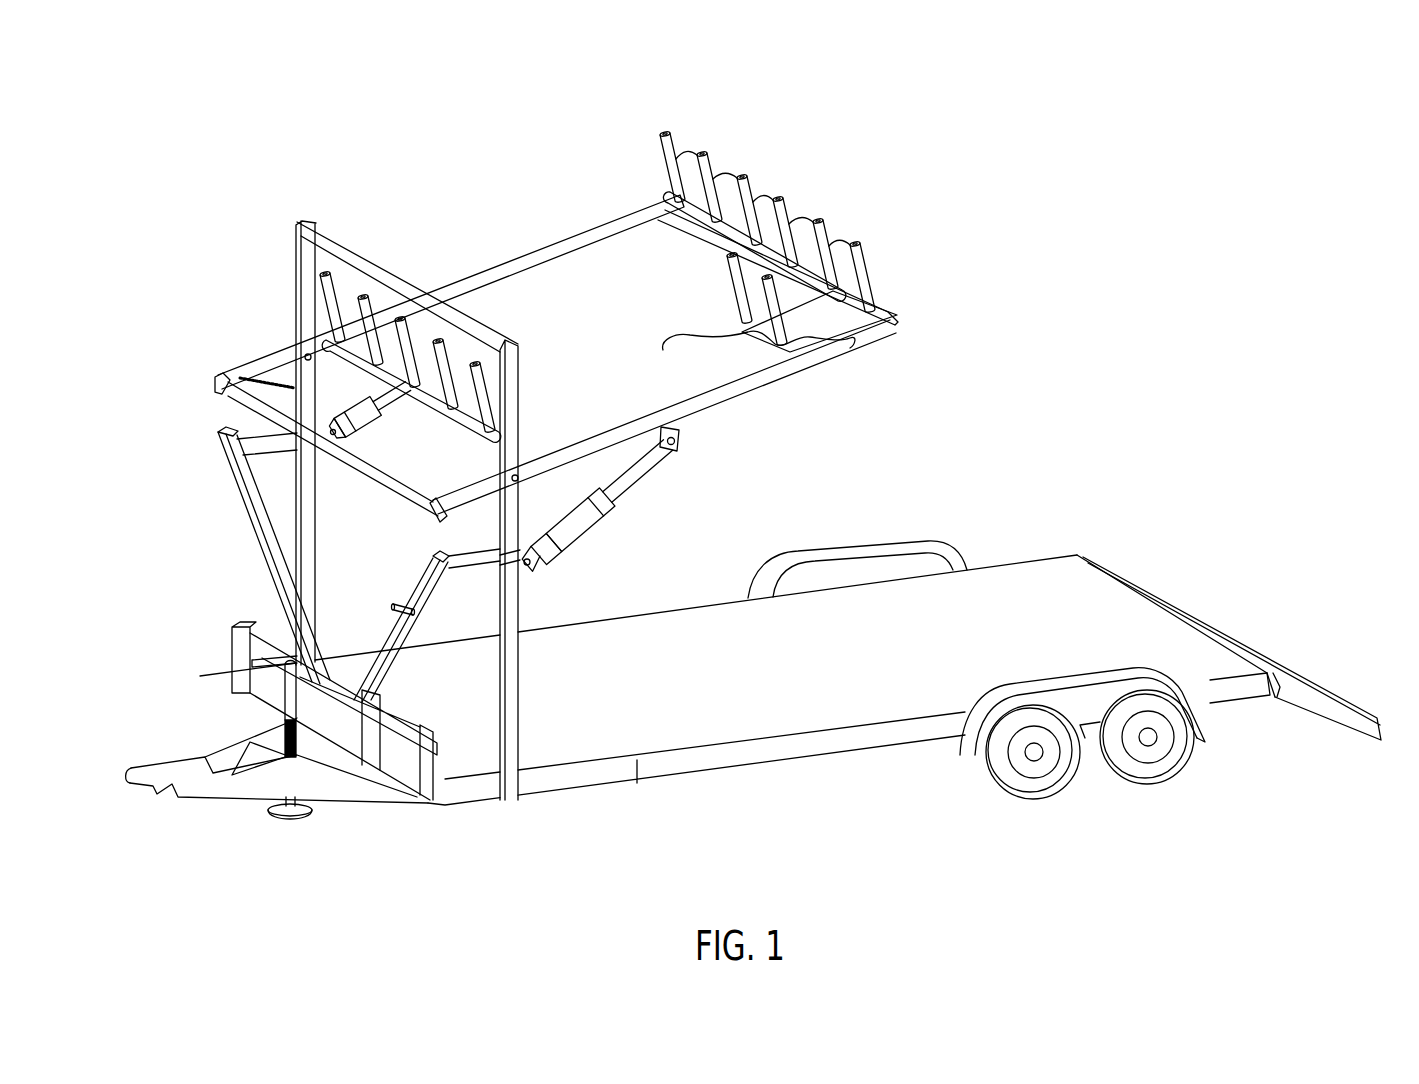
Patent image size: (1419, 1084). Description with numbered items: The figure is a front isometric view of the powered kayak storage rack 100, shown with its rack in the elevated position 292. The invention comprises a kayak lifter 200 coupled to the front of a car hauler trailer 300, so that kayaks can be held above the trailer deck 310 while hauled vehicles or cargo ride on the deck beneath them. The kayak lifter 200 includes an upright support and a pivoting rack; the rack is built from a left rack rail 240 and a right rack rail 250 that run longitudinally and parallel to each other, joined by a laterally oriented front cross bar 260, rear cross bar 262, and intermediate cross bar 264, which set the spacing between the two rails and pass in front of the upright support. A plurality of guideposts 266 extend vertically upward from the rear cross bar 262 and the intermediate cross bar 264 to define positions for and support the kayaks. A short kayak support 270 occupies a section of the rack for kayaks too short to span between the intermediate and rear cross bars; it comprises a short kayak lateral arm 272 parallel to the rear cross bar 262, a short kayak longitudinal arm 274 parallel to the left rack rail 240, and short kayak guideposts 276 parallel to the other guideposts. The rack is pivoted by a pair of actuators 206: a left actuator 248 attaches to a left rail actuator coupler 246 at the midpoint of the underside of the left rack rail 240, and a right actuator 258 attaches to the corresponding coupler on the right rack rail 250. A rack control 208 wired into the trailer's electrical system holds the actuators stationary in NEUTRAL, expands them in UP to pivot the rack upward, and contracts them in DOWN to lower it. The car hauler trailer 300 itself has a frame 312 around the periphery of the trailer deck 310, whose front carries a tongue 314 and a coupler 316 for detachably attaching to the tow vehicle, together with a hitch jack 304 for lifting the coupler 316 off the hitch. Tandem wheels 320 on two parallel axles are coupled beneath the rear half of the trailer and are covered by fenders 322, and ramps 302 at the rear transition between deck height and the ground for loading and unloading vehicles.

The powered kayak storage rack 100 is at (190, 210).
The kayak lifter 200 is at (207, 832).
The pair of actuators 206 is at (607, 505).
The rack control 208 is at (393, 607).
The left rack rail 240 is at (745, 387).
The left rail actuator coupler 246 is at (685, 433).
The left actuator 248 is at (583, 518).
The right rack rail 250 is at (540, 243).
The right actuator 258 is at (370, 400).
The front cross bar 260 is at (380, 477).
The rear cross bar 262 is at (707, 217).
The intermediate cross bar 264 is at (362, 357).
The guideposts 266 is at (747, 198).
The short kayak support 270 is at (882, 245).
The short kayak lateral arm 272 is at (763, 340).
The short kayak longitudinal arm 274 is at (813, 302).
The short kayak guideposts 276 is at (773, 298).
The elevated position 292 is at (1040, 210).
The car hauler trailer 300 is at (1077, 588).
The ramps 302 is at (1315, 695).
The hitch jack 304 is at (292, 697).
The trailer deck 310 is at (1010, 590).
The frame 312 is at (900, 758).
The tongue 314 is at (337, 787).
The coupler 316 is at (147, 782).
The tandem wheels 320 is at (1153, 780).
The fenders 322 is at (1000, 695).